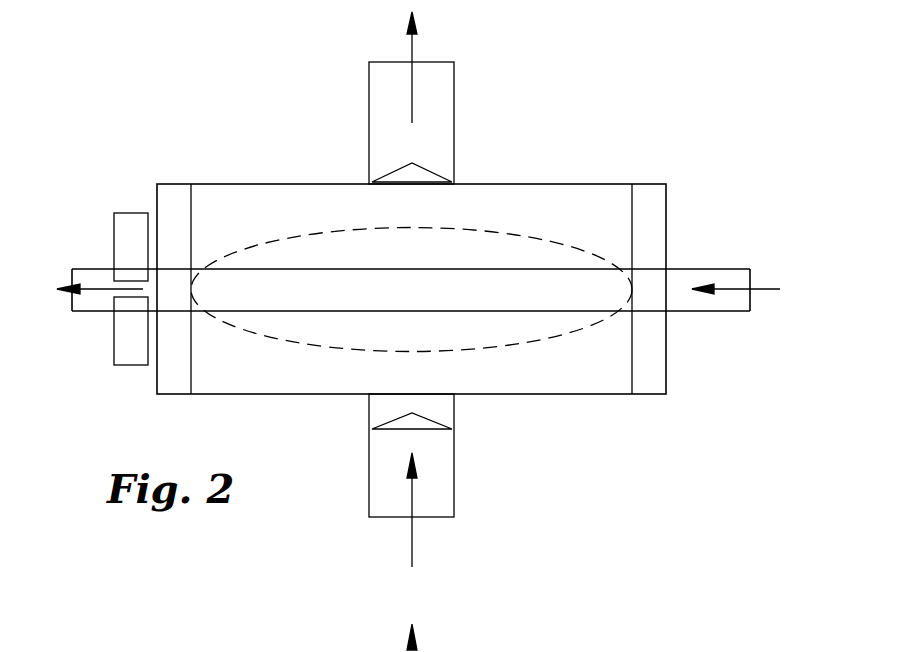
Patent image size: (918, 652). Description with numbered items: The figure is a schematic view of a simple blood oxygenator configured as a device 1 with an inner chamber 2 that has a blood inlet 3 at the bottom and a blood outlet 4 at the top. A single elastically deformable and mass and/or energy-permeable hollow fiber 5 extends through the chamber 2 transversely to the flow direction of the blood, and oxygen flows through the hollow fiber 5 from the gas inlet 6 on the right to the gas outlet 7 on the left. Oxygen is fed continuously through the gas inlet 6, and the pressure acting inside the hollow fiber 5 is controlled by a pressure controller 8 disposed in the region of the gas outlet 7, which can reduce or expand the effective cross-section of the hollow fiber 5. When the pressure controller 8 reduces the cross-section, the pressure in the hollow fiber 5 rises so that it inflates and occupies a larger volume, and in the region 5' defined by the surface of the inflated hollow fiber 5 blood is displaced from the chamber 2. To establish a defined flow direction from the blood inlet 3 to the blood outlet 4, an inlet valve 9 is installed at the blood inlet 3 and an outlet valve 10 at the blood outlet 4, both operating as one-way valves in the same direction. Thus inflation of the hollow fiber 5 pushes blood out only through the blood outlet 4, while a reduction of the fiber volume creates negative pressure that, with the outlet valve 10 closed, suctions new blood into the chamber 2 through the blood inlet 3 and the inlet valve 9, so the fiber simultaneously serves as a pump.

The device 1 is at (680, 172).
The inner chamber 2 is at (560, 202).
The blood inlet 3 is at (454, 457).
The blood outlet 4 is at (454, 122).
The hollow fiber 5 is at (411, 327).
The region 5' is at (411, 341).
The gas inlet 6 is at (747, 290).
The gas outlet 7 is at (88, 290).
The pressure controller 8 is at (126, 244).
The inlet valve 9 is at (421, 413).
The outlet valve 10 is at (421, 160).